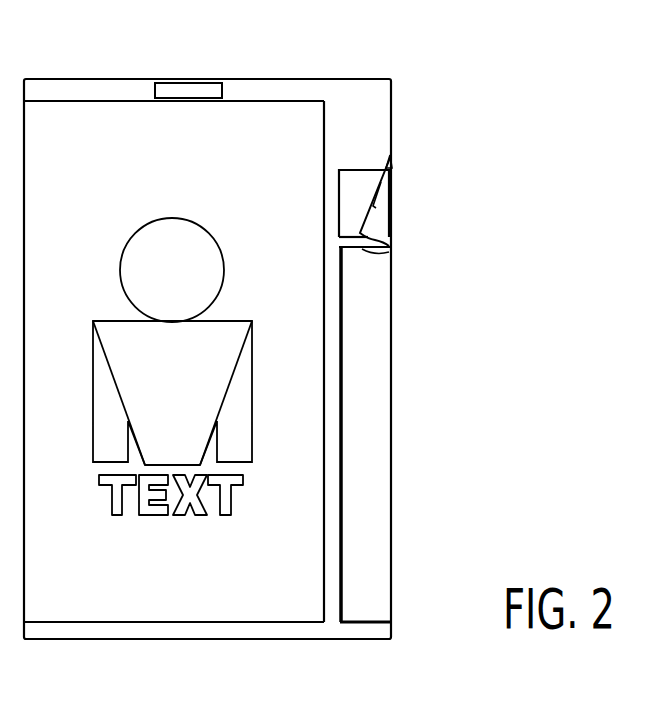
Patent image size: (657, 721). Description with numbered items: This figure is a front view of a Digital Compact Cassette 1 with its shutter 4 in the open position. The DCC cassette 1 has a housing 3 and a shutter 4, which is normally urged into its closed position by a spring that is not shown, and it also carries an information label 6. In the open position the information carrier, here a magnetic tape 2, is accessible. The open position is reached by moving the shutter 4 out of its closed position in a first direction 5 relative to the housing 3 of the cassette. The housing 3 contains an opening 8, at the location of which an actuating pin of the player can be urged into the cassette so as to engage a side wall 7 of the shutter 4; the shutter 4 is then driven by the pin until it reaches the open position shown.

The Digital Compact Cassette 1 is at (160, 55).
The magnetic tape 2 is at (389, 198).
The housing 3 is at (358, 92).
The shutter 4 is at (382, 344).
The first direction 5 is at (416, 383).
The information label 6 is at (58, 100).
The side wall 7 is at (365, 250).
The opening 8 is at (389, 163).